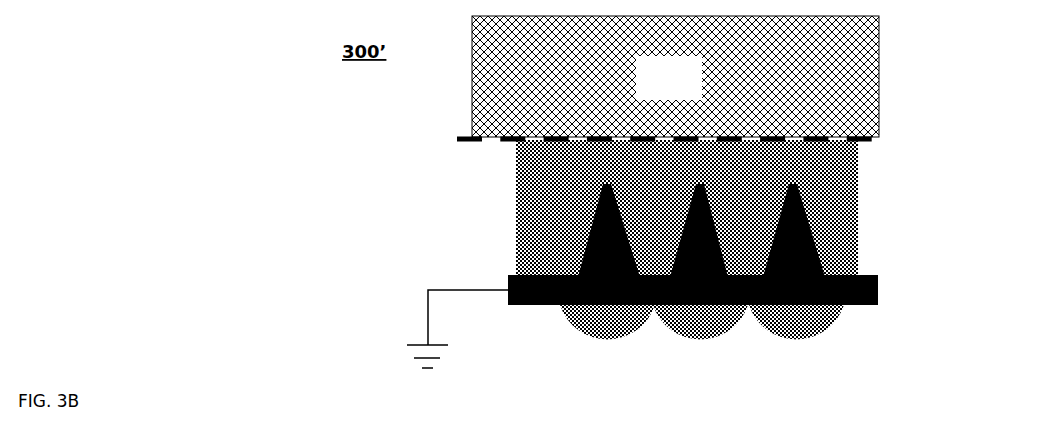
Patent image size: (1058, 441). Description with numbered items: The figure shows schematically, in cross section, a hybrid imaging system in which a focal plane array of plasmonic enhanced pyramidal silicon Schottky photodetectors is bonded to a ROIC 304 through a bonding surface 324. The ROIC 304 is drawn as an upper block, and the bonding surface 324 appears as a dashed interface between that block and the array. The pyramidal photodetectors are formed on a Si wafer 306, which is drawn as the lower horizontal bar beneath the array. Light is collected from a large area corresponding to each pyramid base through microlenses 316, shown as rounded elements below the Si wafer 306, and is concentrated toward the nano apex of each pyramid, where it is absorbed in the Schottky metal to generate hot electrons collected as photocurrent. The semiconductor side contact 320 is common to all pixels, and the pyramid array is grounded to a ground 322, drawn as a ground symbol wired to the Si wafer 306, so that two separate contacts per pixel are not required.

The ROIC 304 is at (675, 76).
The Si wafer 306 is at (531, 299).
The microlenses 316 is at (779, 335).
The semiconductor side contact 320 is at (554, 201).
The ground 322 is at (438, 329).
The bonding surface 324 is at (470, 142).